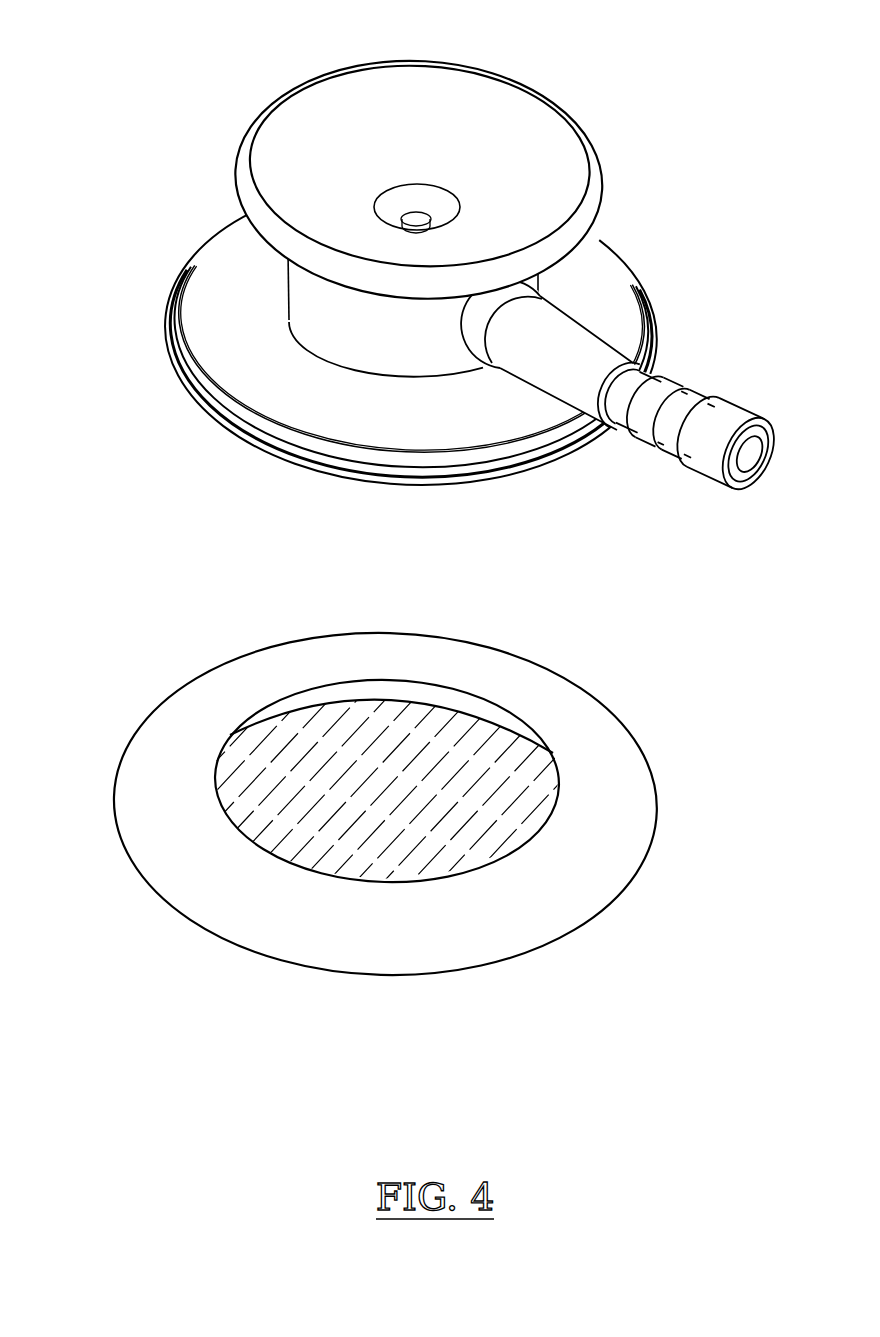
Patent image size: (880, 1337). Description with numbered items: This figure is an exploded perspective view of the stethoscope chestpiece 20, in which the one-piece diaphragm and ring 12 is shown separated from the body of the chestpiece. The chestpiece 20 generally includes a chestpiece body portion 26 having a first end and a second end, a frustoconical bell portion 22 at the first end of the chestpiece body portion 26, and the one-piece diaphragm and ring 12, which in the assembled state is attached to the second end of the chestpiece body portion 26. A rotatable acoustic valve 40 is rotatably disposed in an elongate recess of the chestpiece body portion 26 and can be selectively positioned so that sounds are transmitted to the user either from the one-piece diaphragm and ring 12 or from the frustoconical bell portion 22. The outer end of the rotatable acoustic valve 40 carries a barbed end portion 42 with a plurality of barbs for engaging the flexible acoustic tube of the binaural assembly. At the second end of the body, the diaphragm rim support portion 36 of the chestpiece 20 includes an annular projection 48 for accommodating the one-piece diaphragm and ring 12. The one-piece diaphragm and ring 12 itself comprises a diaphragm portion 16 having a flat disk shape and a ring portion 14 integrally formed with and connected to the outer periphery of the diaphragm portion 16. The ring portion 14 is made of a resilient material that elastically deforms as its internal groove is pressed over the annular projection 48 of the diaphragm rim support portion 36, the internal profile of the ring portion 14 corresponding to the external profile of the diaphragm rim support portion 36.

The one-piece diaphragm and ring 12 is at (213, 946).
The ring portion 14 is at (565, 855).
The diaphragm portion 16 is at (440, 767).
The chestpiece 20 is at (179, 399).
The frustoconical bell portion 22 is at (325, 150).
The chestpiece body portion 26 is at (337, 315).
The diaphragm rim support portion 36 is at (303, 395).
The rotatable acoustic valve 40 is at (562, 355).
The barbed end portion 42 is at (678, 452).
The annular projection 48 is at (375, 478).